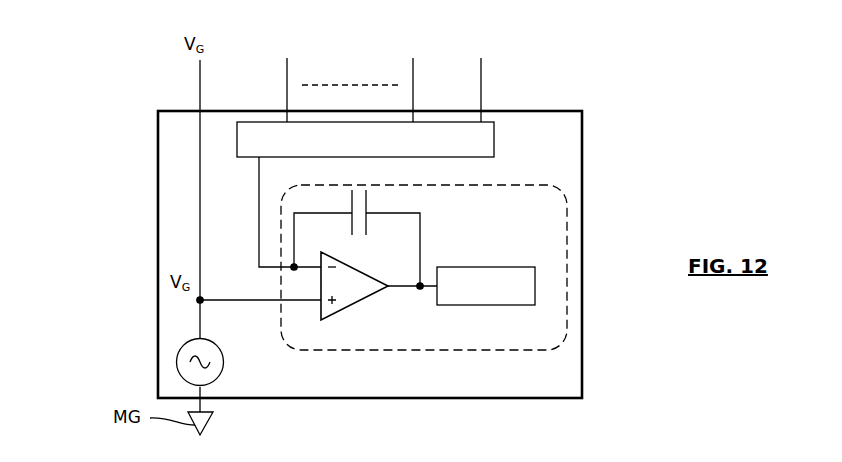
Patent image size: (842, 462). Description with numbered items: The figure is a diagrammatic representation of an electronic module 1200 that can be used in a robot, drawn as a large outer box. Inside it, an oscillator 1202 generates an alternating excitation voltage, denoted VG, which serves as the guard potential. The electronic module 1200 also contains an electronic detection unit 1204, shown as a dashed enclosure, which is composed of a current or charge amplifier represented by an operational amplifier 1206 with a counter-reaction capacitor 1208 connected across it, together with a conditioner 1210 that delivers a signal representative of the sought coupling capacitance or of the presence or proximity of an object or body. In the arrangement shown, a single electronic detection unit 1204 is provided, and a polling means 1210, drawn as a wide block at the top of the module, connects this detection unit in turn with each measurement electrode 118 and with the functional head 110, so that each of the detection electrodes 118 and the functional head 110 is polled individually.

The electronic module 1200 is at (131, 155).
The detection electrode 118 is at (337, 78).
The functional head 110 is at (480, 78).
The conditioner 1210 is at (386, 213).
The electronic detection unit 1204 is at (424, 267).
The counter-reaction capacitor 1208 is at (368, 203).
The operational amplifier 1206 is at (345, 293).
The oscillator 1202 is at (177, 361).